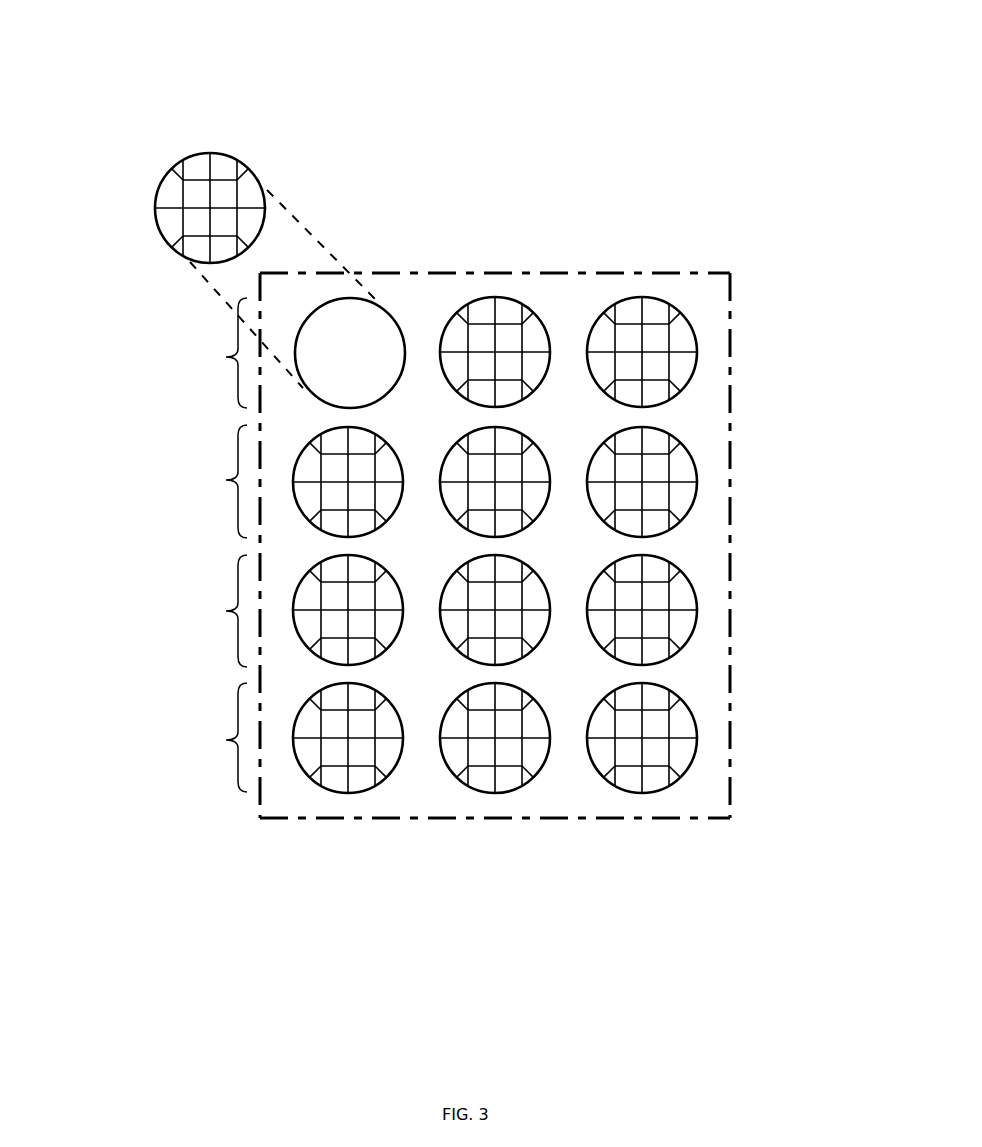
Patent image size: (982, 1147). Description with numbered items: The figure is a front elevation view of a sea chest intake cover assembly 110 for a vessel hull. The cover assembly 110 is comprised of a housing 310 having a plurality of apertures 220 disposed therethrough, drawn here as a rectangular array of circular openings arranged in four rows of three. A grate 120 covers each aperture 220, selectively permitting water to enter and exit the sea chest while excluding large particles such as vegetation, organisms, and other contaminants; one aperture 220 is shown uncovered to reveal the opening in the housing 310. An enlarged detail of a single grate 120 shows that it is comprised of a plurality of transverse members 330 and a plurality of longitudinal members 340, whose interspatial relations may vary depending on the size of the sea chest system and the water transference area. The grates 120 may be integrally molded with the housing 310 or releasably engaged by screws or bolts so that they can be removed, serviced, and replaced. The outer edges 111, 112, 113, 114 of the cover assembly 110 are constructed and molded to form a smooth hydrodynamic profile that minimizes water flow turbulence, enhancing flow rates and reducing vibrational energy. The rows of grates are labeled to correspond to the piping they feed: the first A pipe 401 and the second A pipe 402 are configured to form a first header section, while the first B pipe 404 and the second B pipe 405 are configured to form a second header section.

The cover assembly 110 is at (495, 438).
The edge 111 is at (558, 272).
The edge 112 is at (733, 567).
The edge 113 is at (500, 820).
The edge 114 is at (253, 800).
The grate 120 is at (231, 236).
The aperture 220 is at (388, 312).
The housing 310 is at (690, 783).
The transverse member 330 is at (210, 166).
The longitudinal member 340 is at (226, 132).
The first A pipe 401 is at (392, 285).
The second A pipe 402 is at (192, 618).
The first B pipe 404 is at (192, 480).
The second B pipe 405 is at (433, 798).